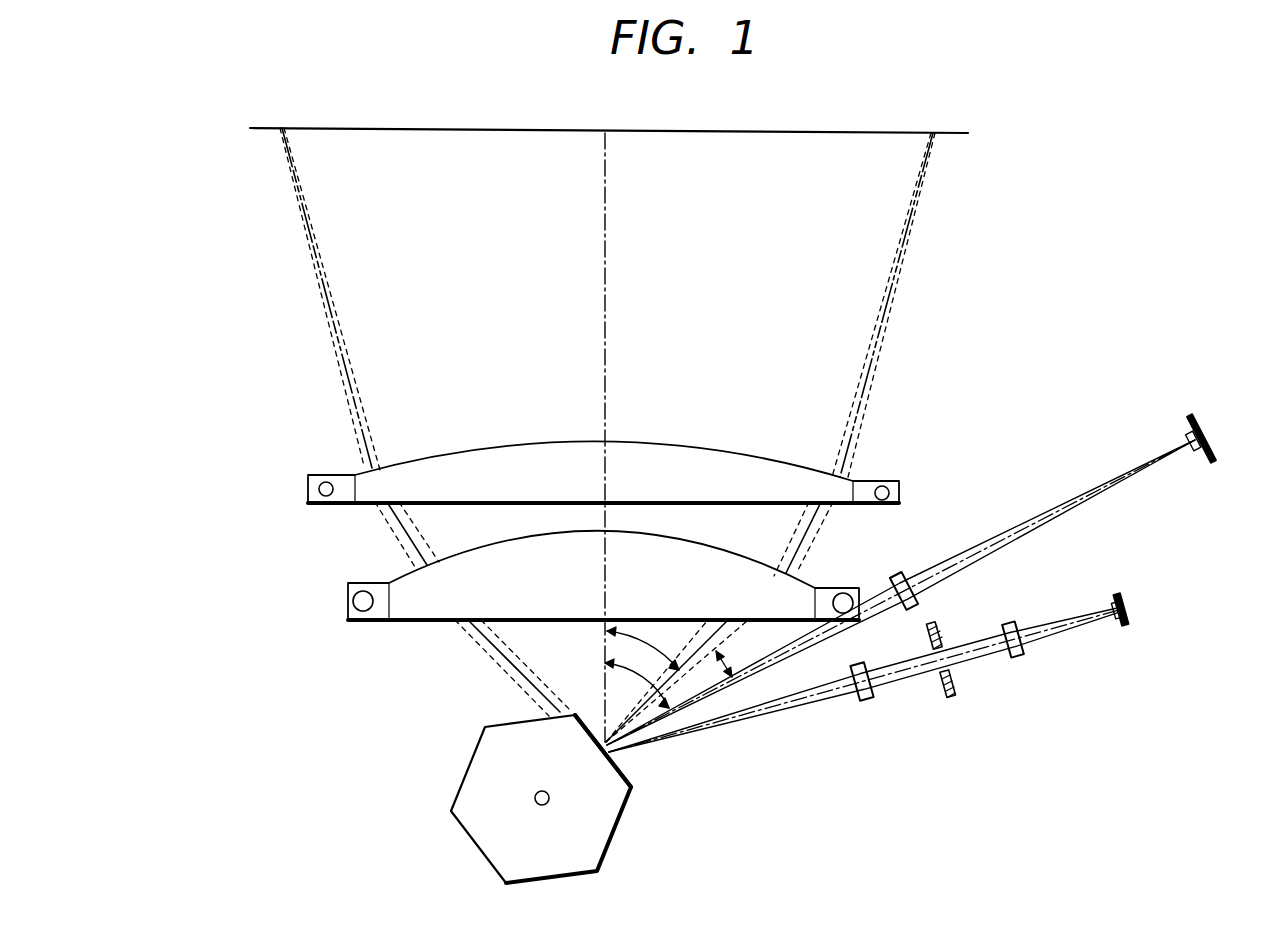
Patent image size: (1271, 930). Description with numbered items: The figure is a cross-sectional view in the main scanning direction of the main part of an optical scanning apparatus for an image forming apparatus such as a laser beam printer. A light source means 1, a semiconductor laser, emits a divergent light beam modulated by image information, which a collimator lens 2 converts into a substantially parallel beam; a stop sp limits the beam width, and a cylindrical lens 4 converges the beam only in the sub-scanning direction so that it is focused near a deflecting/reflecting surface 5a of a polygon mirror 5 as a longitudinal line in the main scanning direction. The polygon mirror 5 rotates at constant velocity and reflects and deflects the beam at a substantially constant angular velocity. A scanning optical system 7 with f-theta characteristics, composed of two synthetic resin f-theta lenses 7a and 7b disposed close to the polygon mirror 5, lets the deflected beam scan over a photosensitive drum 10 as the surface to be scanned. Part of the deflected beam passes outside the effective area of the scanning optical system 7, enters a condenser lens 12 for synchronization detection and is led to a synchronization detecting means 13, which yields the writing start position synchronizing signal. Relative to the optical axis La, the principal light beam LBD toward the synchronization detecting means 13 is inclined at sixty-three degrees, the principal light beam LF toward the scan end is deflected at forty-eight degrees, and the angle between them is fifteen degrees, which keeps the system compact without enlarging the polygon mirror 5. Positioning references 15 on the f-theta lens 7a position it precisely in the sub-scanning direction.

The light source means 1 is at (1127, 620).
The collimator lens 2 is at (1020, 660).
The cylindrical lens 4 is at (860, 700).
The polygon mirror 5 is at (593, 832).
The deflecting/reflecting surface 5a is at (627, 775).
The scanning optical system 7 is at (556, 560).
The f-theta lens 7a is at (348, 597).
The f-theta lens 7b is at (308, 488).
The photosensitive drum 10 is at (907, 132).
The condenser lens 12 is at (902, 573).
The synchronization detecting means 13 is at (1200, 423).
The positioning reference 15 is at (595, 560).
The optical axis La is at (608, 256).
The principal light beam LF is at (870, 336).
The principal light beam for synchronization detection LBD is at (1032, 532).
The stop sp is at (938, 696).